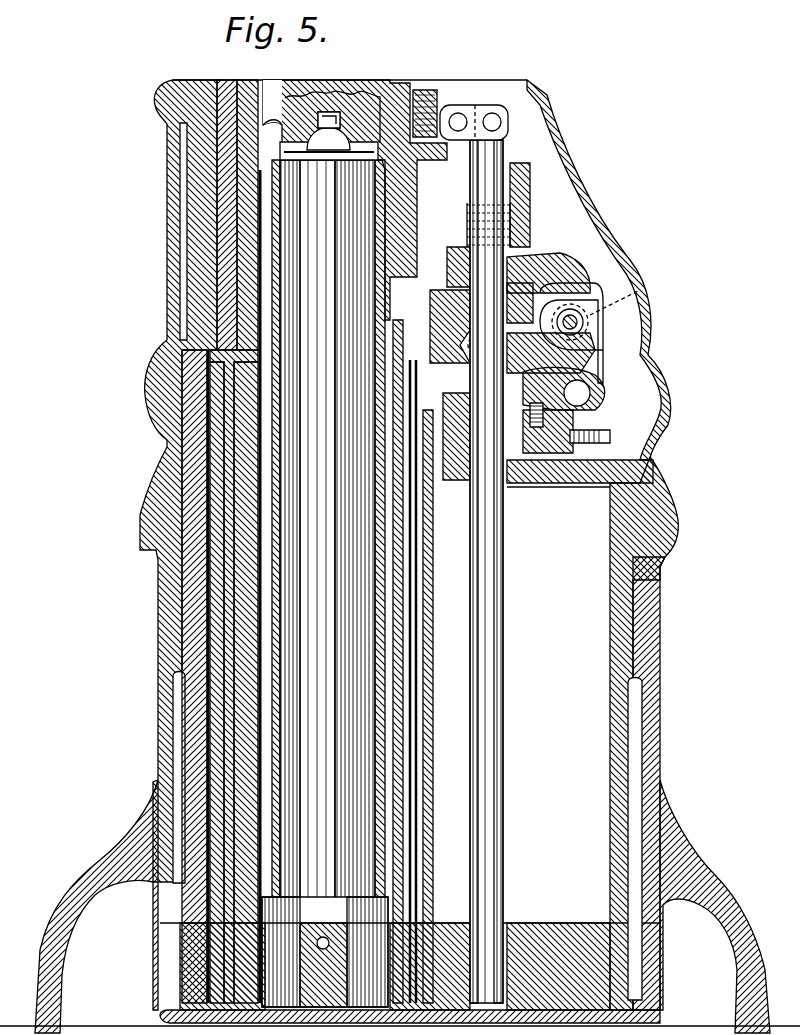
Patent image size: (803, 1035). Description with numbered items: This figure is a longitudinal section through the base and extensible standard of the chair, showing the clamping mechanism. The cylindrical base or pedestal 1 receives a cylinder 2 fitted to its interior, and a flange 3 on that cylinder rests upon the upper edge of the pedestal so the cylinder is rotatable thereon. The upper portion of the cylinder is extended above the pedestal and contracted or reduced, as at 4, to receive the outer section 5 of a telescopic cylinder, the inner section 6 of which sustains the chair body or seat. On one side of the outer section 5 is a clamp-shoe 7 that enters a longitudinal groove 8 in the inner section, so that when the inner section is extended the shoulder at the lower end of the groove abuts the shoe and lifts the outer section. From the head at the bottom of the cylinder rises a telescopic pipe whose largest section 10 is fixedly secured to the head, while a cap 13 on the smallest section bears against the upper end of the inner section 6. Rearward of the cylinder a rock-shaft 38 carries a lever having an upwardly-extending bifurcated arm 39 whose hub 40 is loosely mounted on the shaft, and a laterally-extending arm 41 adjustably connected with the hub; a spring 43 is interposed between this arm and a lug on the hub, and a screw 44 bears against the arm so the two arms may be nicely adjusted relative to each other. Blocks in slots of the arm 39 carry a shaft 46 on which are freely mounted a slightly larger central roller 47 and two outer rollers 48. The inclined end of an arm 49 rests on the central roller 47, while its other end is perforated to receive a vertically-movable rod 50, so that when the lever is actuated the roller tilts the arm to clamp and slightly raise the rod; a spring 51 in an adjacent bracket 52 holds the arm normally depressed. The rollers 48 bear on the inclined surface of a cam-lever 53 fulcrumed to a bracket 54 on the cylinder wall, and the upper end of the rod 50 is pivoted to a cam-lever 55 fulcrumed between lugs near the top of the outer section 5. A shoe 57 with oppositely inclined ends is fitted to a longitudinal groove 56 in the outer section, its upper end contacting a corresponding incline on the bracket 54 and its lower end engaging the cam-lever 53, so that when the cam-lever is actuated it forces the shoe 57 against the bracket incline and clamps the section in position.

The cylindrical base or pedestal 1 is at (645, 638).
The cylinder 2 is at (193, 607).
The flange 3 is at (677, 535).
The contracted or reduced portion 4 is at (200, 242).
The outer section of telescopic cylinder 5 is at (210, 698).
The inner section of telescopic cylinder 6 is at (243, 735).
The clamp-shoe 7 is at (437, 103).
The longitudinal groove 8 is at (412, 602).
The largest pipe section 10 is at (325, 559).
The cap 13 is at (327, 128).
The rock-shaft 38 is at (603, 397).
The upwardly-extending bifurcated arm 39 is at (595, 335).
The hub 40 is at (607, 385).
The laterally-extending arm 41 is at (557, 445).
The spring 43 is at (540, 427).
The screw 44 is at (607, 437).
The shaft 46 is at (573, 322).
The central roller 47 is at (590, 310).
The rollers 48 is at (640, 290).
The arm 49 is at (563, 283).
The vertically-movable rod 50 is at (487, 697).
The spring 51 is at (517, 220).
The bracket 52 is at (515, 193).
The cam-lever 53 is at (593, 360).
The bracket 54 is at (523, 293).
The cam-lever 55 is at (500, 113).
The longitudinal groove 56 is at (433, 795).
The shoe 57 is at (445, 325).